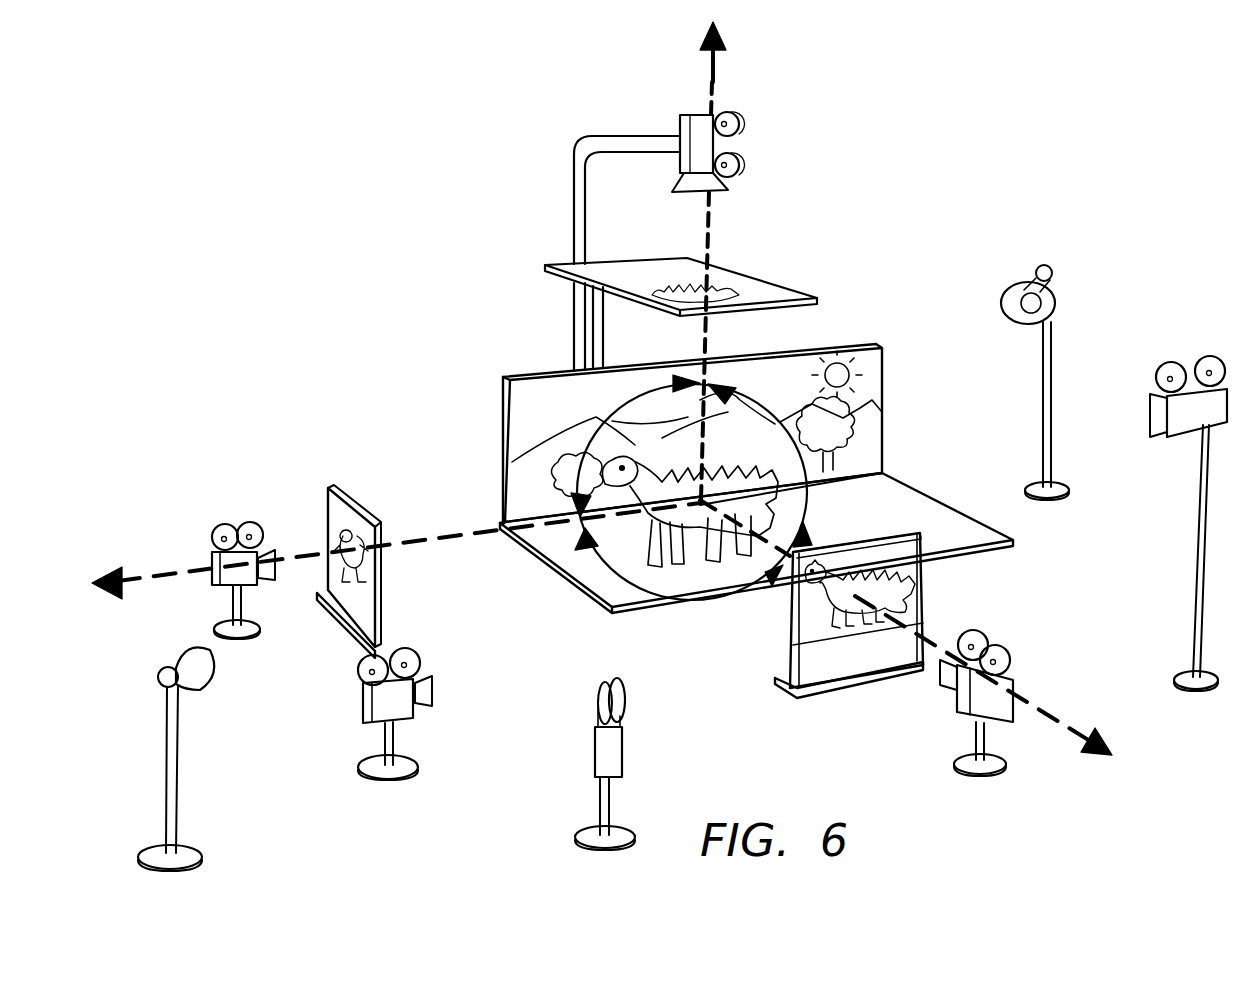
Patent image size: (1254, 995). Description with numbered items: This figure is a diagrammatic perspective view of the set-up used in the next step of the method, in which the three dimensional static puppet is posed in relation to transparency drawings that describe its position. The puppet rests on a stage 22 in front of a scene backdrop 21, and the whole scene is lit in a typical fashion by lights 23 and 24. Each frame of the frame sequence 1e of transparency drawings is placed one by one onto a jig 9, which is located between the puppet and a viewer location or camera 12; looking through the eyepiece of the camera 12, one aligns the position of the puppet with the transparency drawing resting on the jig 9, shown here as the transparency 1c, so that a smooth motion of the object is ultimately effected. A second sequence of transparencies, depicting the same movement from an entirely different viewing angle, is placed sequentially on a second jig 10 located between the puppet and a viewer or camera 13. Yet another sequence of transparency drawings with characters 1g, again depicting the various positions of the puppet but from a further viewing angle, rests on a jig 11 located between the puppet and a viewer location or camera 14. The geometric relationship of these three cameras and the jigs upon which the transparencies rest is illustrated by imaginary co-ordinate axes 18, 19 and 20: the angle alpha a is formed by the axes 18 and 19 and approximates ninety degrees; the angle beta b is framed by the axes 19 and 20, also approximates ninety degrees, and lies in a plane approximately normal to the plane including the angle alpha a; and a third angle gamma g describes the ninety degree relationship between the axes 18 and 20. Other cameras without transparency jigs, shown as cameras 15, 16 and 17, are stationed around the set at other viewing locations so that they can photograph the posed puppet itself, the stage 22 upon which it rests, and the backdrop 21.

The jig 9 is at (790, 614).
The second jig 10 is at (377, 566).
The jig 11 is at (795, 303).
The camera 12 is at (1006, 652).
The camera 13 is at (866, 395).
The camera 14 is at (742, 162).
The camera 15 is at (362, 700).
The camera 16 is at (608, 750).
The camera 17 is at (1207, 350).
The co-ordinate axis 18 is at (1068, 727).
The co-ordinate axis 19 is at (138, 573).
The co-ordinate axis 20 is at (716, 95).
The scene backdrop 21 is at (502, 415).
The stage 22 is at (592, 590).
The light 23 is at (193, 650).
The light 24 is at (1022, 272).
The displayed image 1c is at (913, 591).
The frame sequence of transparency drawings 1e is at (366, 614).
The transparency drawings with characters 1g is at (778, 292).
The angle alpha a is at (770, 580).
The angle beta b is at (672, 385).
The angle gamma g is at (806, 503).